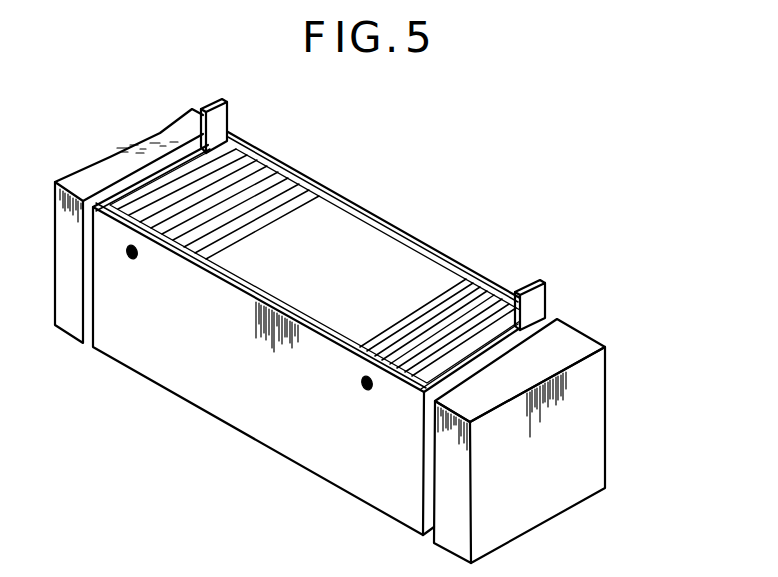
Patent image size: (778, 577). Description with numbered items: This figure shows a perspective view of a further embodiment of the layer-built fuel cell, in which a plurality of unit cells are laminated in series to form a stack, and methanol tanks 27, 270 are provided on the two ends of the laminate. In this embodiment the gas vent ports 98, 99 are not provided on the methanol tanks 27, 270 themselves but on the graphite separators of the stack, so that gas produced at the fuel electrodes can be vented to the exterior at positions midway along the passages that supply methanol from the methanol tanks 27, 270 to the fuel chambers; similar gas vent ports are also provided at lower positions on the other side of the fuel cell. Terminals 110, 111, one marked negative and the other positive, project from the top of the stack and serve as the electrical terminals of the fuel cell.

The methanol tank 270 is at (108, 155).
The methanol tank 27 is at (606, 387).
The negative terminal 110 is at (213, 88).
The terminal 111 is at (537, 262).
The gas vent port 98 is at (136, 262).
The gas vent port 99 is at (369, 392).